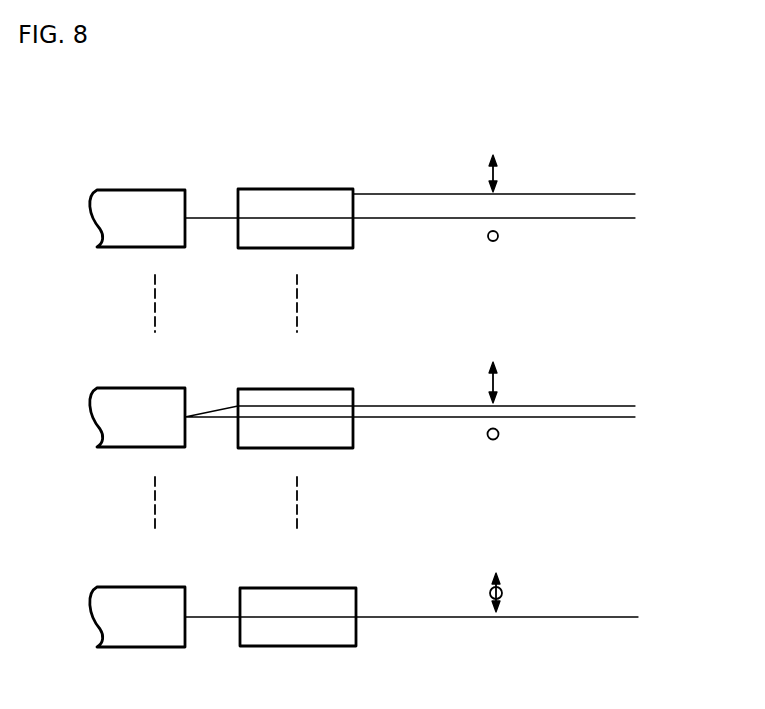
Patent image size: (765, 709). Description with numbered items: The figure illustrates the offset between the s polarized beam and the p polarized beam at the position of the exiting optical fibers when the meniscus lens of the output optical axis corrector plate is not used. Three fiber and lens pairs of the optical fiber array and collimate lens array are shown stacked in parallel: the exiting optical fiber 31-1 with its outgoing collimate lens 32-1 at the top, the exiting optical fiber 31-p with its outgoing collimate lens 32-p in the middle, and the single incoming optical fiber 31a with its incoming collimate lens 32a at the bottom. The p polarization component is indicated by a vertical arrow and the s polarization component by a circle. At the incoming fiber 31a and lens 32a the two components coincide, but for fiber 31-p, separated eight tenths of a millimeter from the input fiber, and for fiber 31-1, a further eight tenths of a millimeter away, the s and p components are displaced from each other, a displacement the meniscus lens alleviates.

The exiting optical fiber 31-1 is at (118, 190).
The outgoing collimate lens 32-1 is at (345, 167).
The exiting optical fiber 31-p is at (118, 388).
The outgoing collimate lens 32-p is at (345, 365).
The incoming optical fiber 31a is at (118, 587).
The incoming collimate lens 32a is at (345, 563).